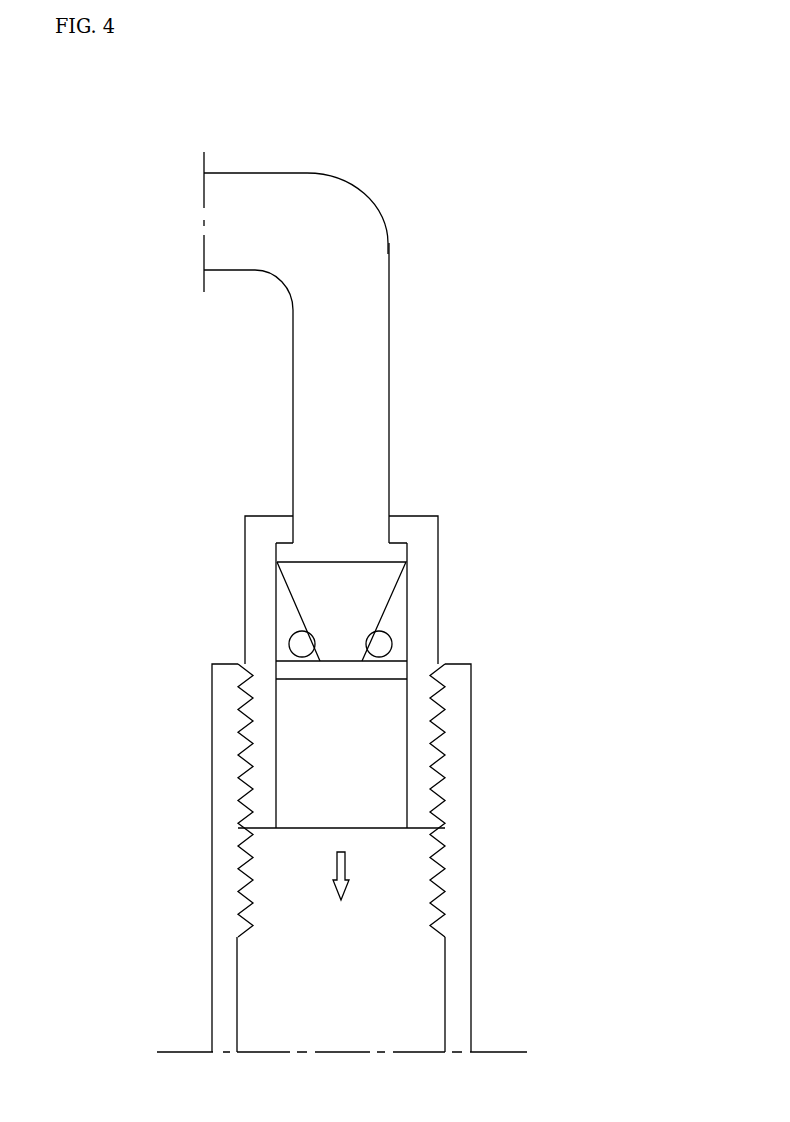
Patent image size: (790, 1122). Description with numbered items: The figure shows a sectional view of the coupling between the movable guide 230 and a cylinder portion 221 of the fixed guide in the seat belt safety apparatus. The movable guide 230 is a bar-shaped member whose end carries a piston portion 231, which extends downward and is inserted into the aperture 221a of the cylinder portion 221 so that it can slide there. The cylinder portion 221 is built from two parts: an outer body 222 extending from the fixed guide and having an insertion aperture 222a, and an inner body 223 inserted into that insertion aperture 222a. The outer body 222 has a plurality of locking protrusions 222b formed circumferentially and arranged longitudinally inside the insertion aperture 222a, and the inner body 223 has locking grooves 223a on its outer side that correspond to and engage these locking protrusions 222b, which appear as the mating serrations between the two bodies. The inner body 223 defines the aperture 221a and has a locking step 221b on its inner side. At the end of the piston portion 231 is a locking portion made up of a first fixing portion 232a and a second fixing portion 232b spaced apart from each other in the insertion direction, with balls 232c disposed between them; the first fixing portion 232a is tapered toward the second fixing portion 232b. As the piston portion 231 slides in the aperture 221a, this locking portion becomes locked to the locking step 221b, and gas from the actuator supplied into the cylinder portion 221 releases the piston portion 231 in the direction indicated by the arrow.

The movable guide 230 is at (265, 195).
The piston portion 231 is at (367, 424).
The inner body 223 is at (255, 577).
The locking step 221b is at (287, 523).
The first fixing portion 232a is at (358, 597).
The second fixing portion 232b is at (370, 680).
The balls 232c is at (388, 645).
The cylinder portion 221 is at (203, 684).
The aperture 221a is at (357, 776).
The locking grooves 223a is at (252, 742).
The outer body 222 is at (222, 974).
The insertion aperture 222a is at (362, 950).
The locking protrusions 222b is at (439, 900).